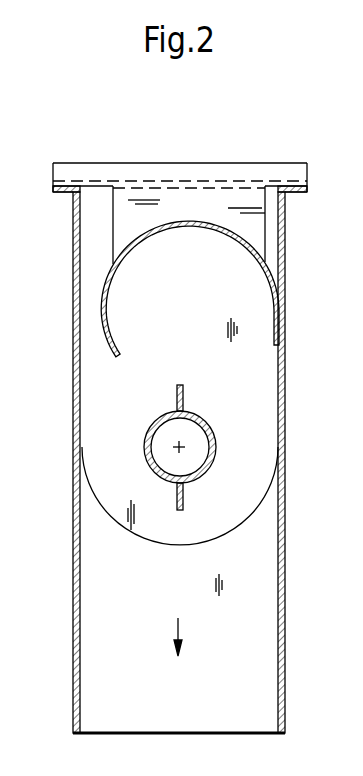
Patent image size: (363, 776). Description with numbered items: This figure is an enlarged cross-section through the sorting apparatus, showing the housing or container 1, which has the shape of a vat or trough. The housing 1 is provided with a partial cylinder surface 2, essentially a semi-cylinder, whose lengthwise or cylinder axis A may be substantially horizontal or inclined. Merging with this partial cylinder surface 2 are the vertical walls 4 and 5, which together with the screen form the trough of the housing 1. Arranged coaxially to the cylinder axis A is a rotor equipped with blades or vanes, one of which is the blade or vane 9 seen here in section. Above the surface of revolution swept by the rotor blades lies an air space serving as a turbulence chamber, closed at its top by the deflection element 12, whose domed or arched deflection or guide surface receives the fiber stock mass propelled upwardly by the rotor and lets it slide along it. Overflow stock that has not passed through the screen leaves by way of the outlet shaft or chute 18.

The housing or container 1 is at (188, 448).
The partial cylinder surface 2 is at (258, 500).
The vertical wall 4 is at (78, 397).
The vertical wall 5 is at (285, 243).
The blade or vane 9 is at (176, 393).
The deflection element 12 is at (203, 222).
The outlet shaft or chute 18 is at (268, 652).
The cylinder axis A is at (176, 448).